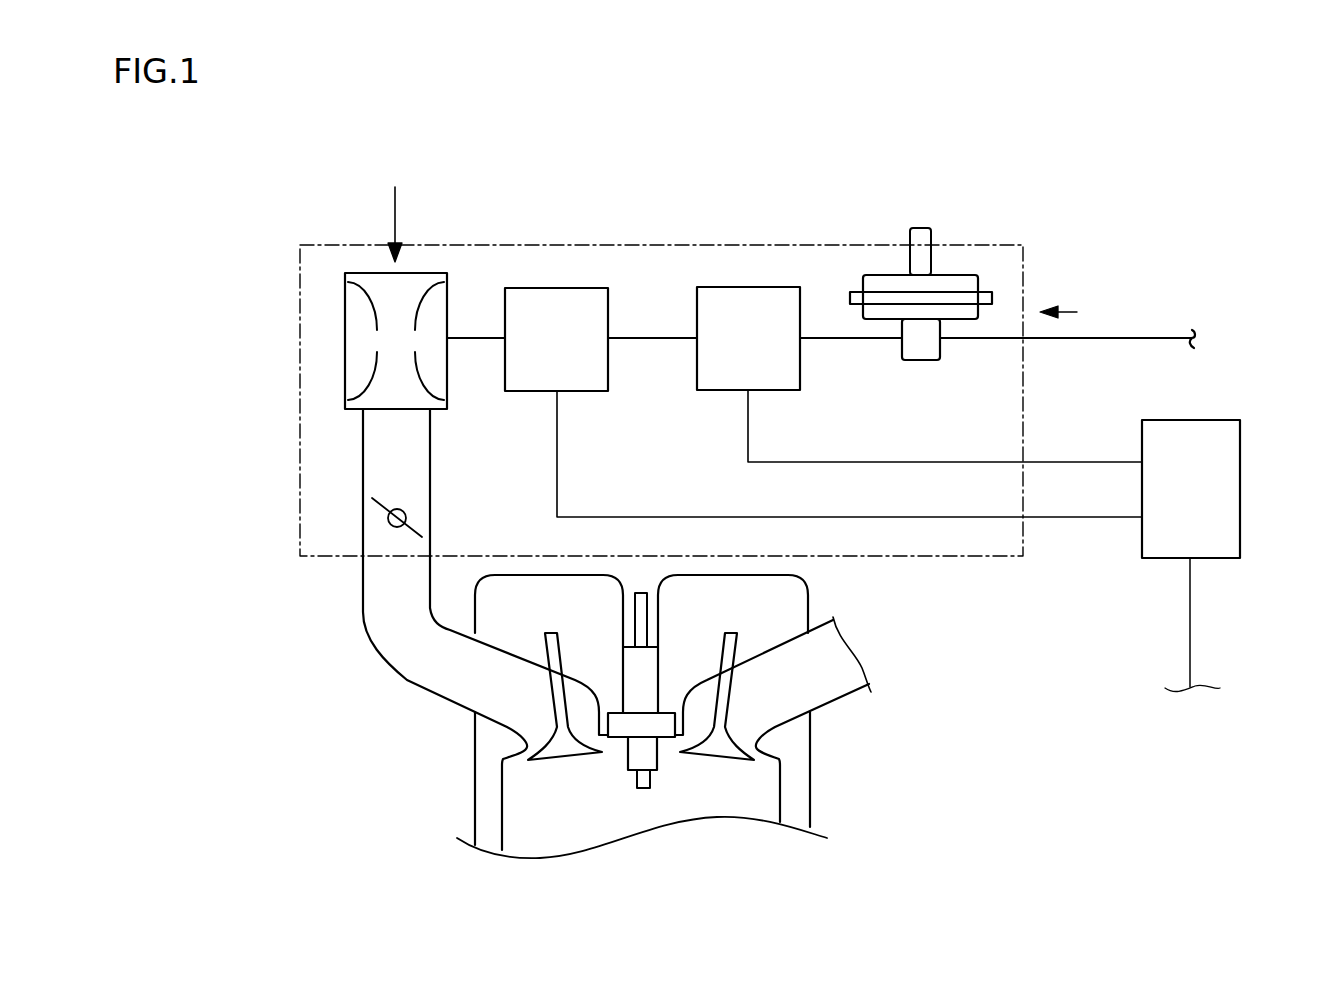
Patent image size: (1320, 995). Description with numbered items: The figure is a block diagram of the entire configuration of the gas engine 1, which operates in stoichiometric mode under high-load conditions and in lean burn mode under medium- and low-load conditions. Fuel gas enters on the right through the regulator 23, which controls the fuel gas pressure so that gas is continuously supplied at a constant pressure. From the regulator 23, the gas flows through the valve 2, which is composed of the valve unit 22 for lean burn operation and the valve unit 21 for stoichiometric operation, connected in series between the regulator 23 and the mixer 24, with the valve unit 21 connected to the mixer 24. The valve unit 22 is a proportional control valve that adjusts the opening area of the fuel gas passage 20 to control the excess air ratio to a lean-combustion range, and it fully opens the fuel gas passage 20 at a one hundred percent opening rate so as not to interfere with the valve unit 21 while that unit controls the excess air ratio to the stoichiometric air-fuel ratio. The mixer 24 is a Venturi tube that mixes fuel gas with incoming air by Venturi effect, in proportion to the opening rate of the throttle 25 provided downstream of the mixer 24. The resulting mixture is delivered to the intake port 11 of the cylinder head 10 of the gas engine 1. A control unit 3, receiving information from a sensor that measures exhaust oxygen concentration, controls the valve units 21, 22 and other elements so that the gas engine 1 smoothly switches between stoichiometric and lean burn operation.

The gas engine 1 is at (243, 153).
The valve 2 is at (655, 243).
The control unit 3 is at (1240, 447).
The cylinder head 10 is at (808, 603).
The intake port 11 is at (473, 687).
The fuel gas passage 20 is at (650, 345).
The valve unit for stoichiometric operation 21 is at (548, 288).
The valve unit for lean burn operation 22 is at (740, 287).
The regulator 23 is at (950, 275).
The mixer 24 is at (345, 337).
The throttle 25 is at (406, 522).